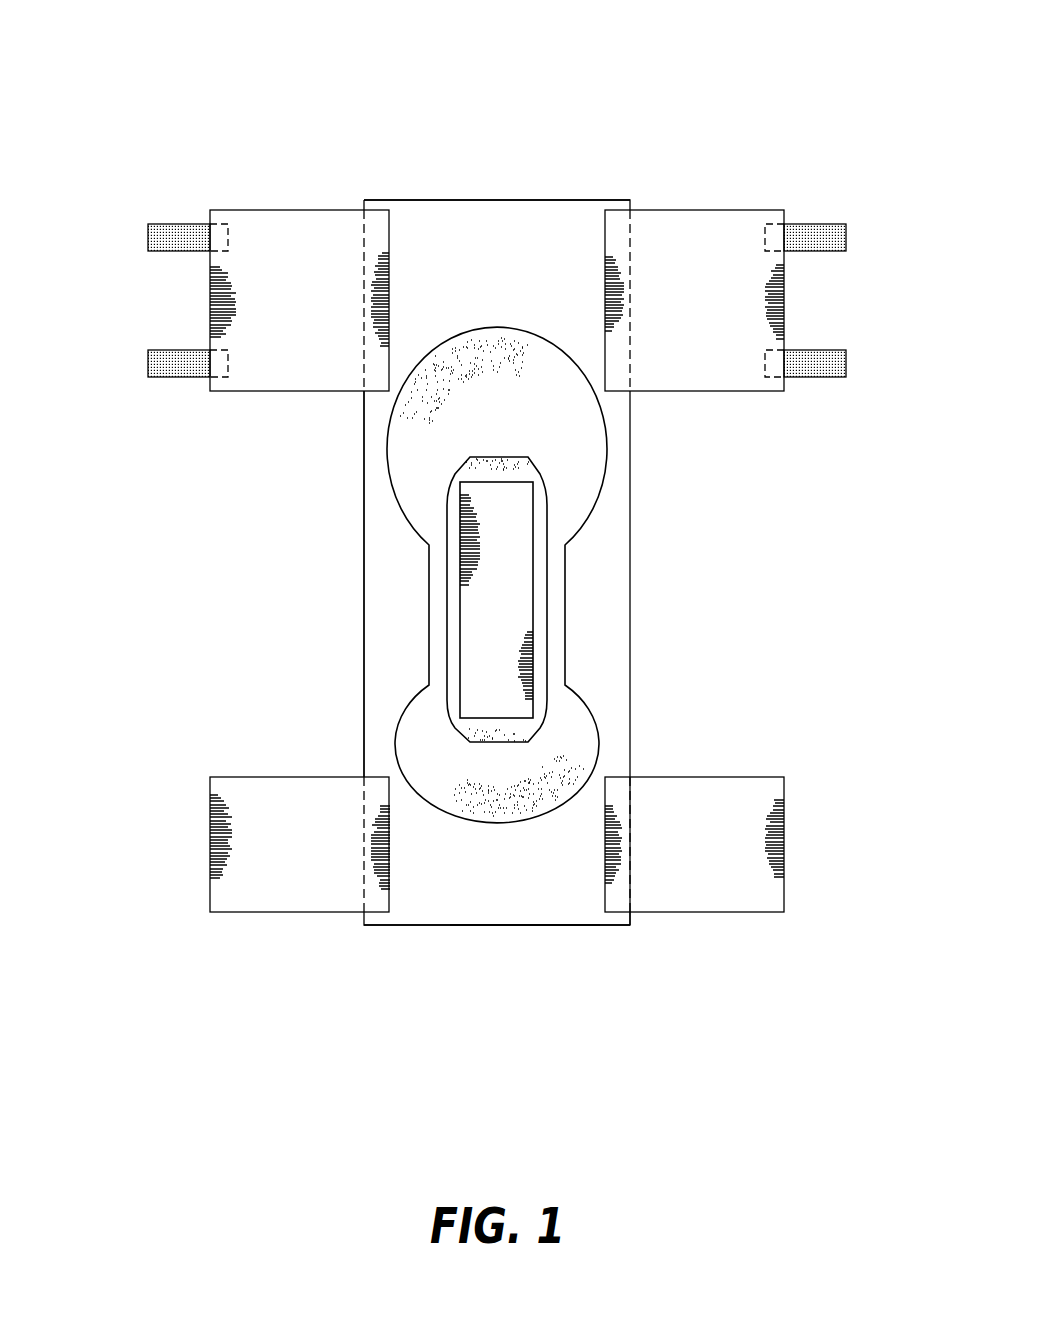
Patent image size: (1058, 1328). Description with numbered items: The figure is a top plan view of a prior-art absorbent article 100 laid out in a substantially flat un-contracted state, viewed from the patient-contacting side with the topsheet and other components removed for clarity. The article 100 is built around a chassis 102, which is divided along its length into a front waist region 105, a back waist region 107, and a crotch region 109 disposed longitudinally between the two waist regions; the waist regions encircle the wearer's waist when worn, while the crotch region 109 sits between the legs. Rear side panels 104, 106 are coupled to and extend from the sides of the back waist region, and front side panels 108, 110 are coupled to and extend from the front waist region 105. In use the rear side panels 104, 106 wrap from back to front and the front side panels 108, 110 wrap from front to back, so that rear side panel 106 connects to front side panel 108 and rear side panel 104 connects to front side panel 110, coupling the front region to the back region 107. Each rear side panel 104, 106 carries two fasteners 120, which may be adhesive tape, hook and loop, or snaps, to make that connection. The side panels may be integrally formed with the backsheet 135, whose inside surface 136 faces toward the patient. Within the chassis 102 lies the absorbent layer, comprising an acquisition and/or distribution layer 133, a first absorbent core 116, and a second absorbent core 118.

The absorbent article 100 is at (220, 124).
The chassis 102 is at (631, 635).
The rear side panel 104 is at (686, 235).
The front waist region 105 is at (413, 888).
The rear side panel 106 is at (299, 225).
The back waist region 107 is at (450, 225).
The front side panel 108 is at (268, 895).
The crotch region 109 is at (364, 572).
The front side panel 110 is at (714, 905).
The first absorbent core 116 is at (555, 352).
The second absorbent core 118 is at (465, 466).
The fasteners 120 is at (918, 364).
The acquisition and/or distribution layer 133 is at (513, 546).
The backsheet 135 is at (523, 927).
The inside surface 136 is at (585, 897).